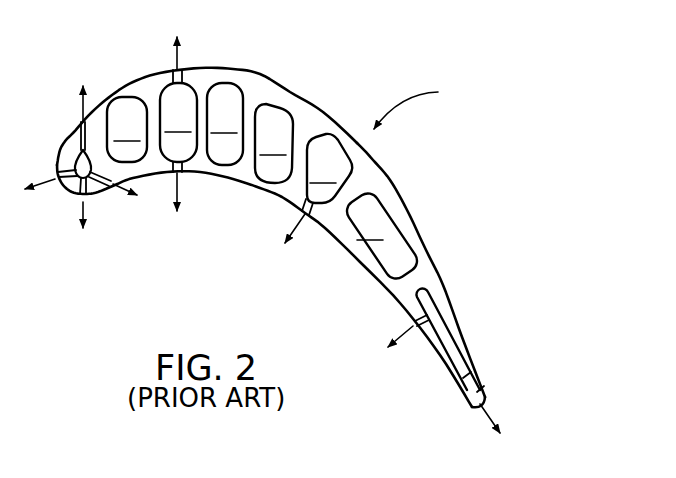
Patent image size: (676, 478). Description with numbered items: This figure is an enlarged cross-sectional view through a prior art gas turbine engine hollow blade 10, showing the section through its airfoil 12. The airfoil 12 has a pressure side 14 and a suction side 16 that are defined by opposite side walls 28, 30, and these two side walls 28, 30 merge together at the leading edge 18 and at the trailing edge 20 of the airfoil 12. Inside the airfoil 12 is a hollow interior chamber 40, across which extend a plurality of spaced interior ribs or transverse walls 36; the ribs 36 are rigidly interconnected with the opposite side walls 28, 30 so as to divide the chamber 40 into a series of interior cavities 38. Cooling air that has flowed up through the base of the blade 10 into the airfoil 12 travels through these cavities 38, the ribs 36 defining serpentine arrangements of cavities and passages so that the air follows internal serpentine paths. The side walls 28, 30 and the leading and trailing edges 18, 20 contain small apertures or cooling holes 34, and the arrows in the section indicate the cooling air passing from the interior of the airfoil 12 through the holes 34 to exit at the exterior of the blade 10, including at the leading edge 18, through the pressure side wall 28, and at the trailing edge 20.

The hollow blade 10 is at (279, 237).
The airfoil 12 is at (462, 301).
The pressure side 14 is at (275, 196).
The suction side 16 is at (315, 103).
The leading edge 18 is at (68, 192).
The trailing edge 20 is at (473, 408).
The side wall 28 is at (372, 270).
The side wall 30 is at (405, 210).
The cooling holes 34 is at (478, 381).
The ribs 36 is at (250, 110).
The interior cavities 38 is at (264, 183).
The hollow interior chamber 40 is at (420, 248).